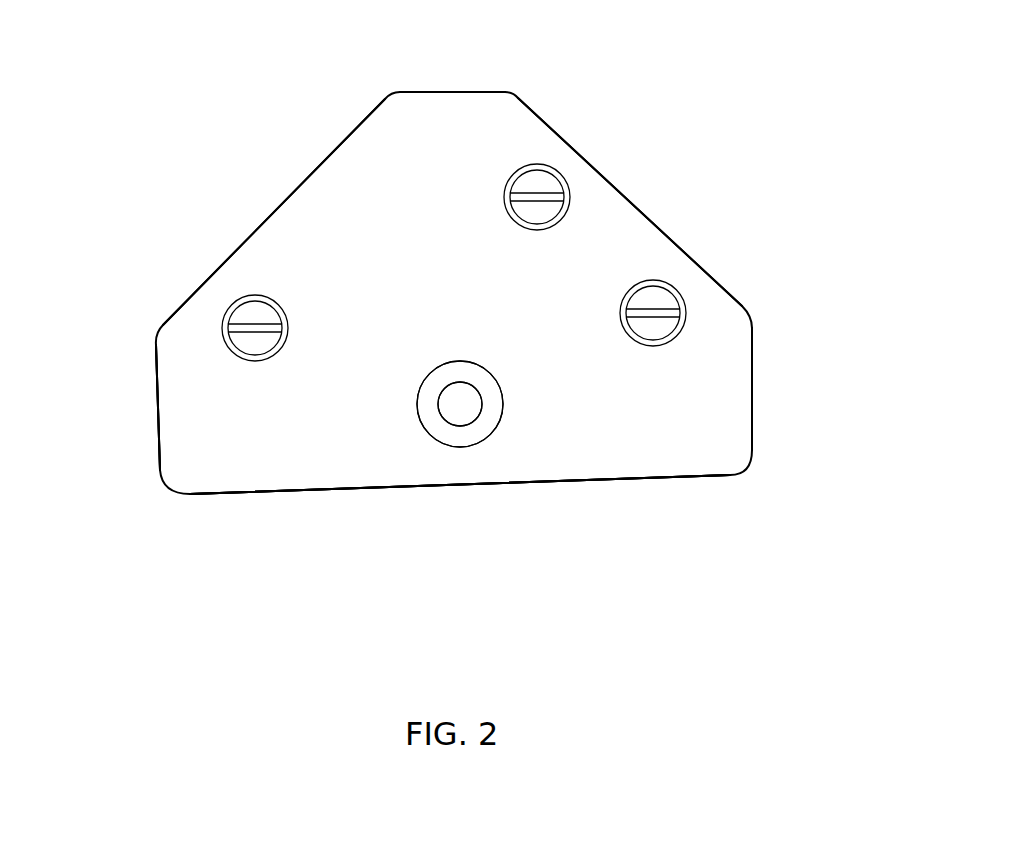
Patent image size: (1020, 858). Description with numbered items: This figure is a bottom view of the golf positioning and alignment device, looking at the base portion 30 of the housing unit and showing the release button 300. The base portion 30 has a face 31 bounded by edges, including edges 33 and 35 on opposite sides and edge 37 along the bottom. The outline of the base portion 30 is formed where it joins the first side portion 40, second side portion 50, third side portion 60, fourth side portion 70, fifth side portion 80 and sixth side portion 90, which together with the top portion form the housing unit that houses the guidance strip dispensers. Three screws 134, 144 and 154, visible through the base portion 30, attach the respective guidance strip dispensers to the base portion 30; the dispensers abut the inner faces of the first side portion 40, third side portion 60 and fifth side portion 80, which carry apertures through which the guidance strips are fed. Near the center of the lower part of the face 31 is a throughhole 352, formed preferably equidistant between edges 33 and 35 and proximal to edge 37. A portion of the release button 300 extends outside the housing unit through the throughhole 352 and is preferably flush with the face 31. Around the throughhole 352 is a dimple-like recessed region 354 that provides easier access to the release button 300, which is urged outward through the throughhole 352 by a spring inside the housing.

The base portion 30 is at (287, 474).
The face 31 is at (548, 460).
The edge 33 is at (755, 410).
The edge 35 is at (158, 437).
The edge 37 is at (234, 493).
The first side portion 40 is at (753, 365).
The second side portion 50 is at (675, 477).
The third side portion 60 is at (156, 390).
The fourth side portion 70 is at (253, 233).
The fifth side portion 80 is at (450, 92).
The sixth side portion 90 is at (657, 225).
The screw 134 is at (658, 302).
The screw 144 is at (537, 187).
The screw 154 is at (255, 342).
The release button 300 is at (458, 410).
The throughhole 352 is at (467, 426).
The recessed region 354 is at (487, 420).